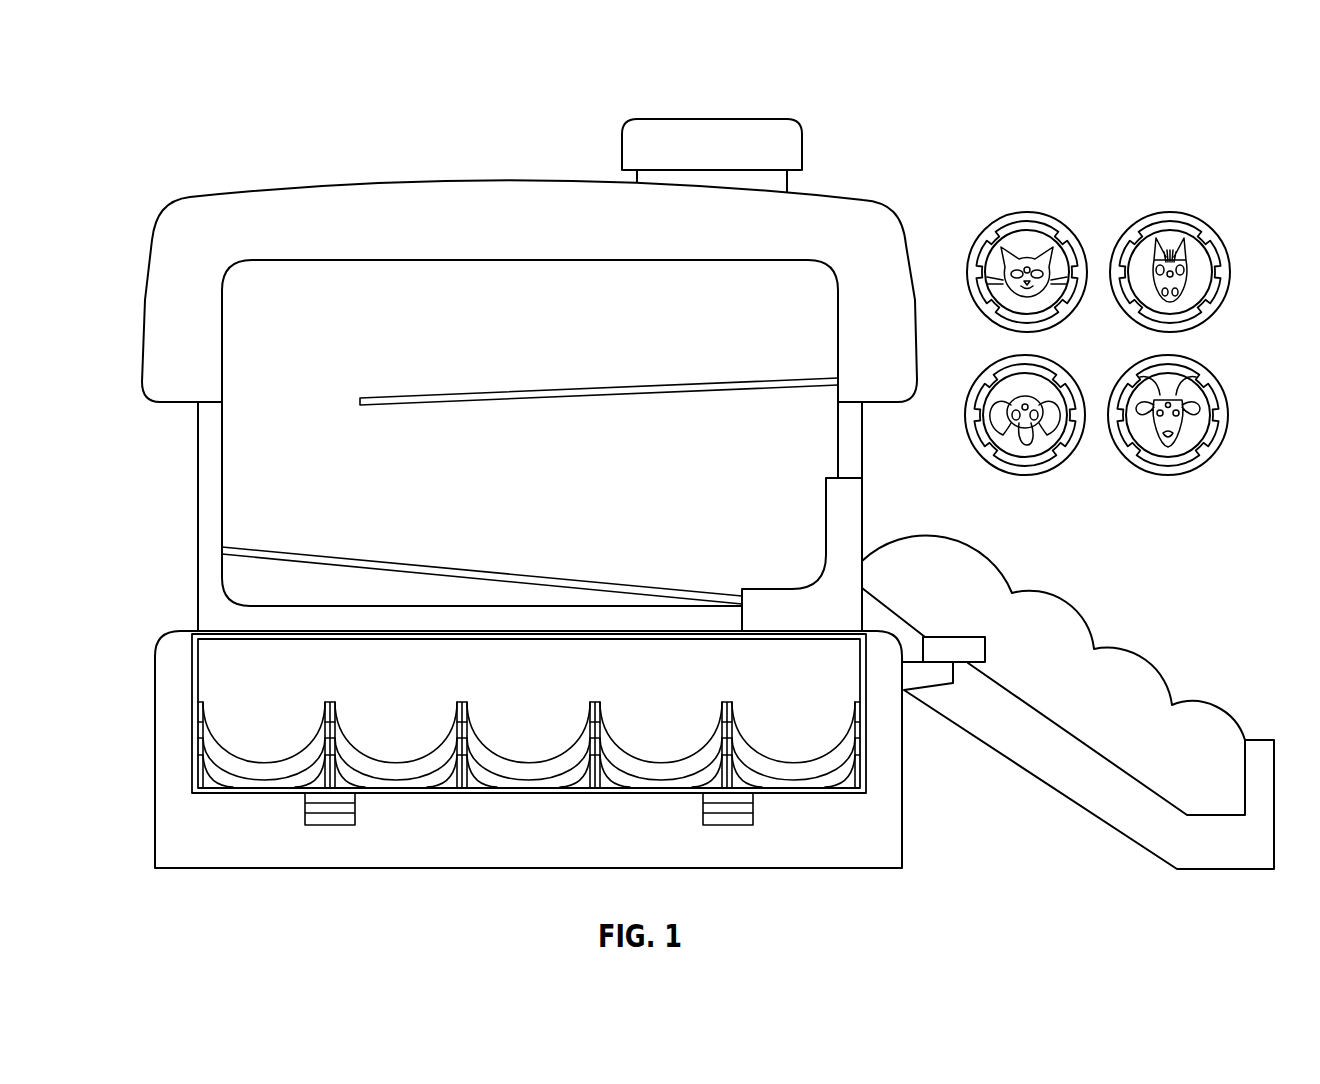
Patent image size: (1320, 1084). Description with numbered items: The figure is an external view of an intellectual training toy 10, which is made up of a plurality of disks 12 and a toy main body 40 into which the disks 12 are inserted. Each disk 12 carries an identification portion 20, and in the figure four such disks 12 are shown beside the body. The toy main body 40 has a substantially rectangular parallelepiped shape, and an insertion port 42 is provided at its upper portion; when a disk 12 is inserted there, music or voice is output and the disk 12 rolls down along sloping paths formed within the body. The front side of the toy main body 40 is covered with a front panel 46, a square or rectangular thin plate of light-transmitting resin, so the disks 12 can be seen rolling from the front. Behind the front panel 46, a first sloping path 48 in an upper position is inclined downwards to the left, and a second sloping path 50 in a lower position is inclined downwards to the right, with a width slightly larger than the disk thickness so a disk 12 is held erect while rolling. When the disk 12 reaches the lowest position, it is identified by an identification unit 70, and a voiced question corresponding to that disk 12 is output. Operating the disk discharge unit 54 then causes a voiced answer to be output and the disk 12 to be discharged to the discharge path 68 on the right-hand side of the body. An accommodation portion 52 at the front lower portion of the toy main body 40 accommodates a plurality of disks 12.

The intellectual training toy 10 is at (925, 177).
The disk 12 is at (989, 201).
The identification portion 20 is at (977, 240).
The toy main body 40 is at (430, 220).
The insertion port 42 is at (655, 145).
The front panel 46 is at (311, 291).
The first sloping path 48 is at (798, 378).
The second sloping path 50 is at (264, 549).
The accommodation portion 52 is at (262, 684).
The disk discharge unit 54 is at (967, 649).
The discharge path 68 is at (1121, 705).
The identification unit 70 is at (843, 522).